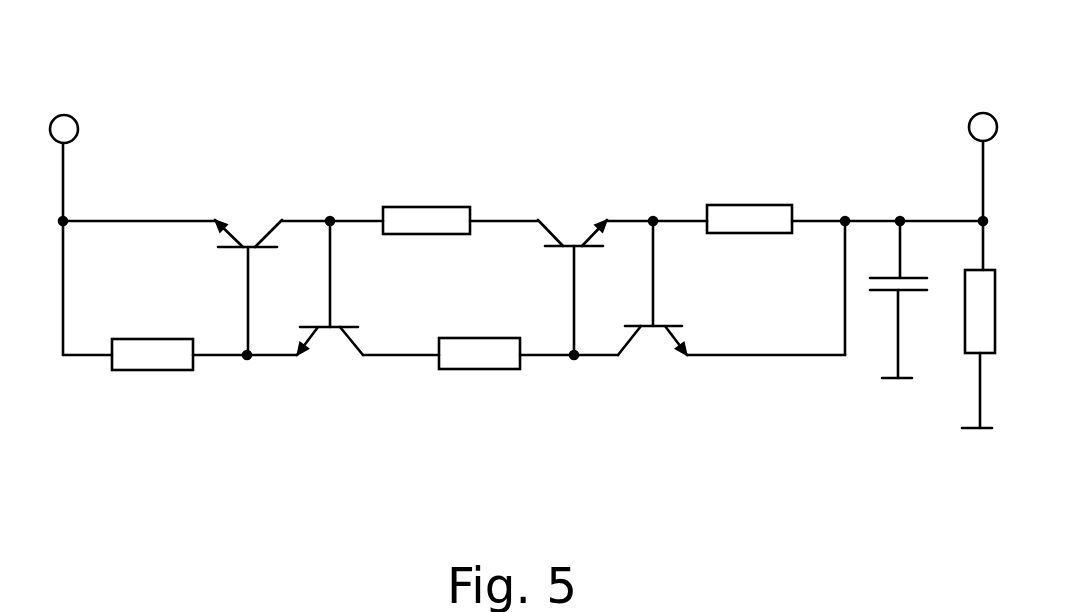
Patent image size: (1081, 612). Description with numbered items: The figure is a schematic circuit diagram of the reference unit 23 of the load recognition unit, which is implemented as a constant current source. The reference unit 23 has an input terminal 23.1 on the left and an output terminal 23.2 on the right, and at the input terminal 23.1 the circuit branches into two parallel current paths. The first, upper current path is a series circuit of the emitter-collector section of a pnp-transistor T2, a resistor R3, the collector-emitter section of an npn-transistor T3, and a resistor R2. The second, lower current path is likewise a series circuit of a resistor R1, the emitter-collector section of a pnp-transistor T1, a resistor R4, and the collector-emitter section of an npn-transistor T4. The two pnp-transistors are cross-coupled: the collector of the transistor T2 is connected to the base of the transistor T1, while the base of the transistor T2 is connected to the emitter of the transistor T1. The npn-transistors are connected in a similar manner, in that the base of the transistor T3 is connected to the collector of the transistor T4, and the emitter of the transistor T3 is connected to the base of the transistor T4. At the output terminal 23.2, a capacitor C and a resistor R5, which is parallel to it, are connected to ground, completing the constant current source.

The reference unit 23 is at (541, 80).
The input terminal 23.1 is at (66, 110).
The output terminal 23.2 is at (982, 150).
The resistor R1 is at (152, 375).
The resistor R2 is at (749, 202).
The resistor R3 is at (426, 204).
The resistor R4 is at (479, 373).
The resistor R5 is at (1000, 324).
The pnp-transistor T1 is at (330, 315).
The pnp-transistor T2 is at (248, 265).
The npn-transistor T3 is at (572, 265).
The npn-transistor T4 is at (652, 316).
The capacitor C is at (900, 299).